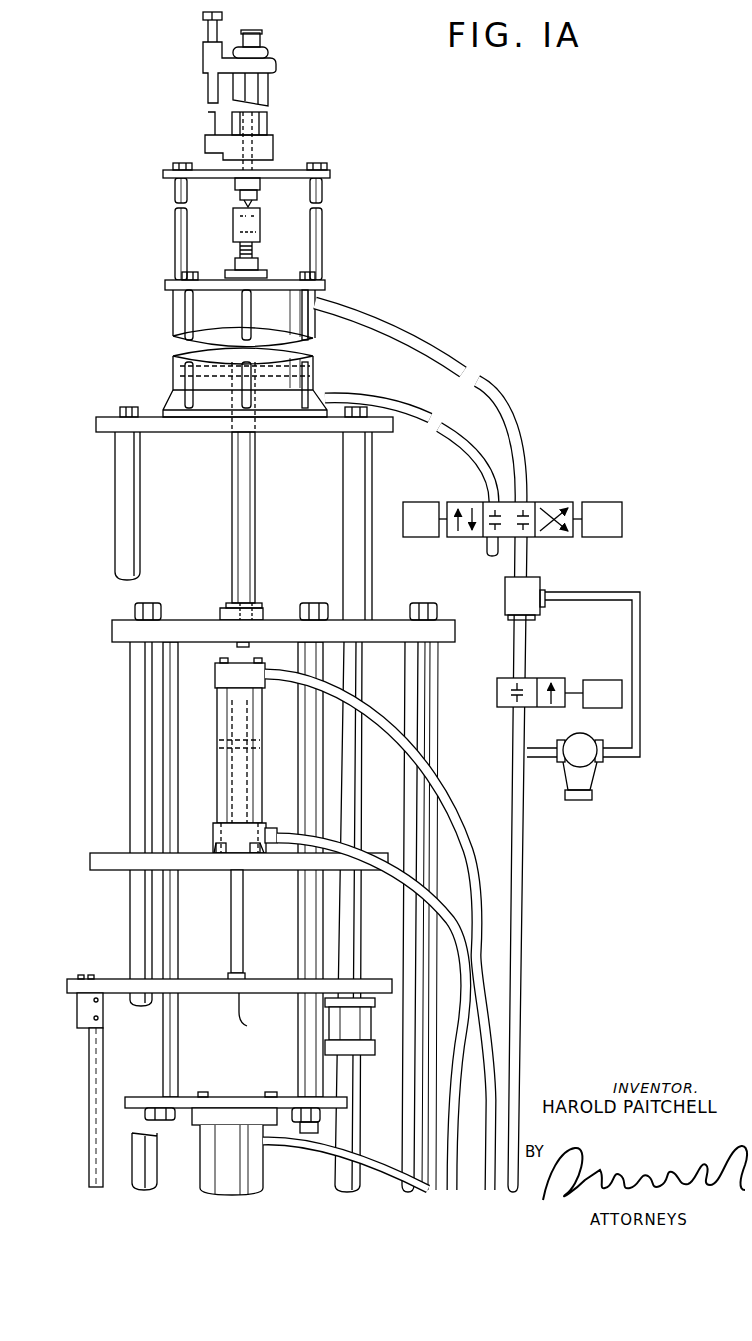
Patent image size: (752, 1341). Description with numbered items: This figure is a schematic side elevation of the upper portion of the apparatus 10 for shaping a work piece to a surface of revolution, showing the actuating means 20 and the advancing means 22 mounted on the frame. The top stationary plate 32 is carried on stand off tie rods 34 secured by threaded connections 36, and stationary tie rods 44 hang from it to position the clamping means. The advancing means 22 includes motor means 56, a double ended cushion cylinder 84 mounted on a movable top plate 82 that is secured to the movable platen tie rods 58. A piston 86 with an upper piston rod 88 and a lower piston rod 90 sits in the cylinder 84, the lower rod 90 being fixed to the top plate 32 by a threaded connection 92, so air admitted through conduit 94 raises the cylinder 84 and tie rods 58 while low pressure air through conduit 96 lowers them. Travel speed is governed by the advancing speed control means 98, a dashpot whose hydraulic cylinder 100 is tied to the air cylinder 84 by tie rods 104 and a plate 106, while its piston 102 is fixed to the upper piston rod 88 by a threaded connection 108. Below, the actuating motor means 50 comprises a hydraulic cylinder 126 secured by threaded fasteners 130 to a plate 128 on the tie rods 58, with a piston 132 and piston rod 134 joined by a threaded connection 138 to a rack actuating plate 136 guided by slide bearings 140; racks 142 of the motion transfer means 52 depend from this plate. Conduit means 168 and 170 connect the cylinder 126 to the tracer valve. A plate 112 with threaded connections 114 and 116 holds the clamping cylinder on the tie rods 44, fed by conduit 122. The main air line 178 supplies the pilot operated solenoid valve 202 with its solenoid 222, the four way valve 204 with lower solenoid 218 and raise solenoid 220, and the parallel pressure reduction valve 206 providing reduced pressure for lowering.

The apparatus 10 is at (410, 217).
The actuating means 20 is at (210, 965).
The advancing means 22 is at (360, 305).
The top stationary plate 32 is at (386, 620).
The stand off tie rods 34 is at (438, 738).
The threaded connections 36 is at (438, 620).
The stationary tie rods 44 is at (181, 904).
The actuating motor means 50 is at (263, 794).
The motion transfer means 52 is at (86, 1107).
The motor means 56 is at (163, 279).
The movable platen tie rods 58 is at (115, 485).
The movable top plate 82 is at (157, 430).
The double ended cushion cylinder 84 is at (328, 291).
The piston 86 is at (316, 357).
The upper piston rod 88 is at (259, 262).
The lower piston rod 90 is at (256, 487).
The threaded connection 92 is at (256, 604).
The fluid conduit 94 is at (436, 356).
The conduit 96 is at (407, 410).
The advancing speed control means 98 is at (278, 55).
The hydraulic cylinder 100 is at (270, 131).
The piston 102 is at (268, 116).
The tie rods 104 is at (324, 235).
The plate 106 is at (290, 170).
The threaded connection 108 is at (260, 229).
The plate 112 is at (219, 1094).
The threaded connection 114 is at (268, 1093).
The threaded connection 116 is at (315, 1134).
The conduit 122 is at (322, 1158).
The hydraulic cylinder 126 is at (260, 732).
The plate 128 is at (266, 871).
The threaded fasteners 130 is at (220, 843).
The piston 132 is at (247, 743).
The piston rod 134 is at (245, 937).
The rack actuating plate 136 is at (246, 976).
The threaded connection 138 is at (259, 1015).
The slide bearings 140 is at (376, 1041).
The racks 142 is at (90, 1068).
The conduit means 168 is at (452, 799).
The conduit means 170 is at (447, 917).
The main air line 178 is at (524, 846).
The pilot operated solenoid controlled valve 202 is at (537, 678).
The four way valve 204 is at (553, 540).
The pressure reduction valve 206 is at (590, 777).
The lower solenoid 218 is at (590, 501).
The raise solenoid 220 is at (413, 501).
The operating solenoid 222 is at (590, 679).